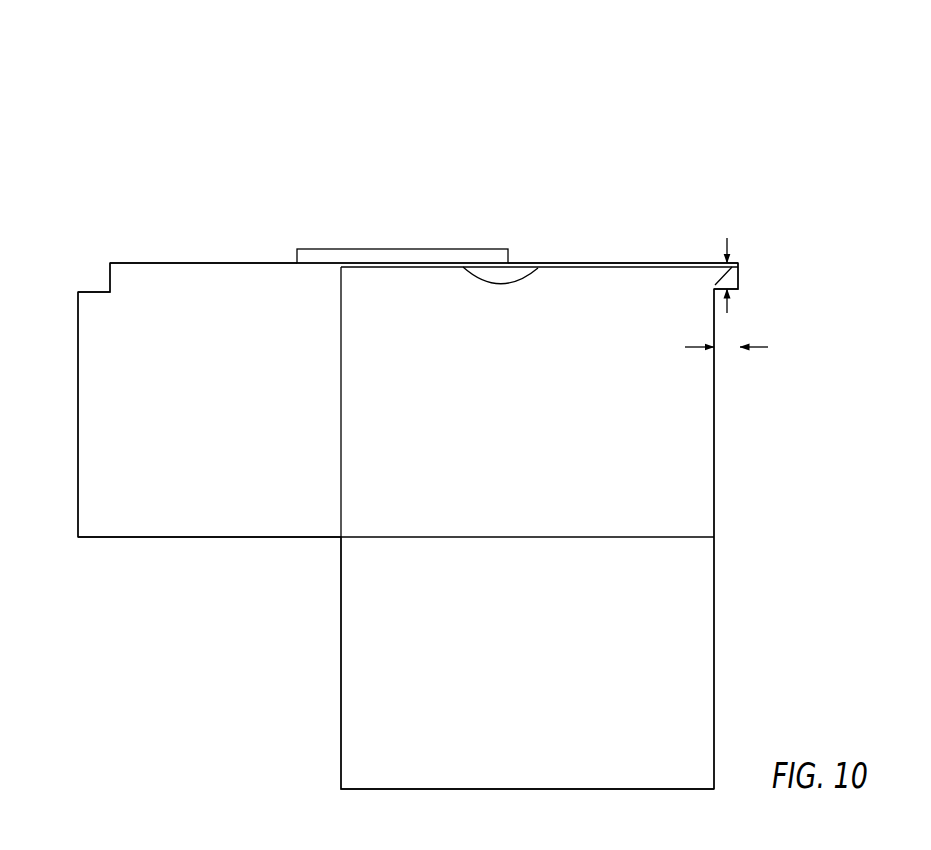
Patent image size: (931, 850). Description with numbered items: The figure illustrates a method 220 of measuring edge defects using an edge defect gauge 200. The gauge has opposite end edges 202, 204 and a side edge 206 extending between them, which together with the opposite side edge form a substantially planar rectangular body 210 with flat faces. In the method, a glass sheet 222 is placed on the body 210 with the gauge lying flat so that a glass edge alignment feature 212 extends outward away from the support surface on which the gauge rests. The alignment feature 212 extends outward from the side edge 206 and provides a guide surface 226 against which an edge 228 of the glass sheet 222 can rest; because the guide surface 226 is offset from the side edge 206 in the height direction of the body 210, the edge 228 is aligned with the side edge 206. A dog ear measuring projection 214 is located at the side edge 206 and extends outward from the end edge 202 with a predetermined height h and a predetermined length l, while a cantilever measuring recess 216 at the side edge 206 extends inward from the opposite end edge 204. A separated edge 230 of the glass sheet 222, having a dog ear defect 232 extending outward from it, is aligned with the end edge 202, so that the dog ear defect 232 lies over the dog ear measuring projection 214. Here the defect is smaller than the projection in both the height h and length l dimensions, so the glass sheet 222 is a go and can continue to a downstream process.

The edge defect gauge 200 is at (140, 228).
The end edge 202 is at (714, 449).
The end edge 204 is at (78, 482).
The side edge 206 is at (210, 247).
The rectangular body 210 is at (213, 488).
The glass edge alignment feature 212 is at (392, 240).
The dog ear measuring projection 214 is at (757, 277).
The cantilever measuring recess 216 is at (93, 272).
The method 220 is at (782, 130).
The glass sheet 222 is at (320, 647).
The guide surface 226 is at (538, 268).
The edge 228 is at (608, 267).
The separated edge 230 is at (714, 626).
The dog ear defect 232 is at (700, 263).
The predetermined height h is at (727, 313).
The predetermined length l is at (727, 350).